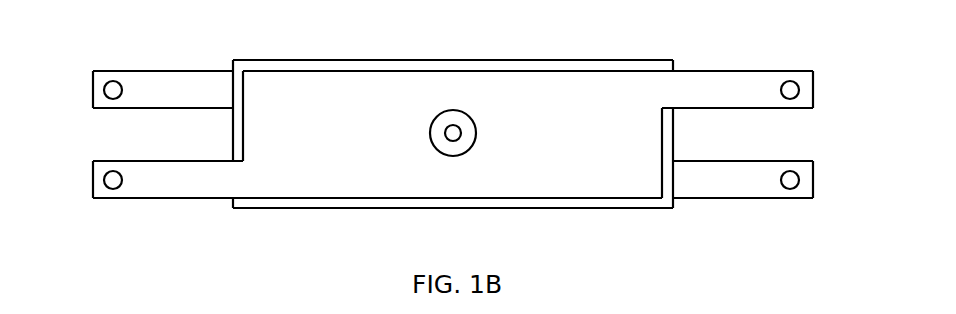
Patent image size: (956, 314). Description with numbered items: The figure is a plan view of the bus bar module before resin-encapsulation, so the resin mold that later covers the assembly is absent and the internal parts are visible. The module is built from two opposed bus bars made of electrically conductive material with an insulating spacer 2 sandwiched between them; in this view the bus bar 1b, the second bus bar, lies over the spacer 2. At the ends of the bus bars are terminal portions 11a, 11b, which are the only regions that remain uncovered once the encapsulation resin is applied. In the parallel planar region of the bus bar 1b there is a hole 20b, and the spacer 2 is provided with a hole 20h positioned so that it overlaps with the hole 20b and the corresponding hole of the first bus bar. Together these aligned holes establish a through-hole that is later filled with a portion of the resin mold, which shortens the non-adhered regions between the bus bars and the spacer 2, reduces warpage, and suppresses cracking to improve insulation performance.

The bus bar 1b is at (553, 92).
The spacer 2 is at (397, 63).
The terminal portion 11a is at (163, 82).
The terminal portion 11b is at (155, 190).
The hole 20b is at (470, 150).
The hole 20h is at (448, 139).